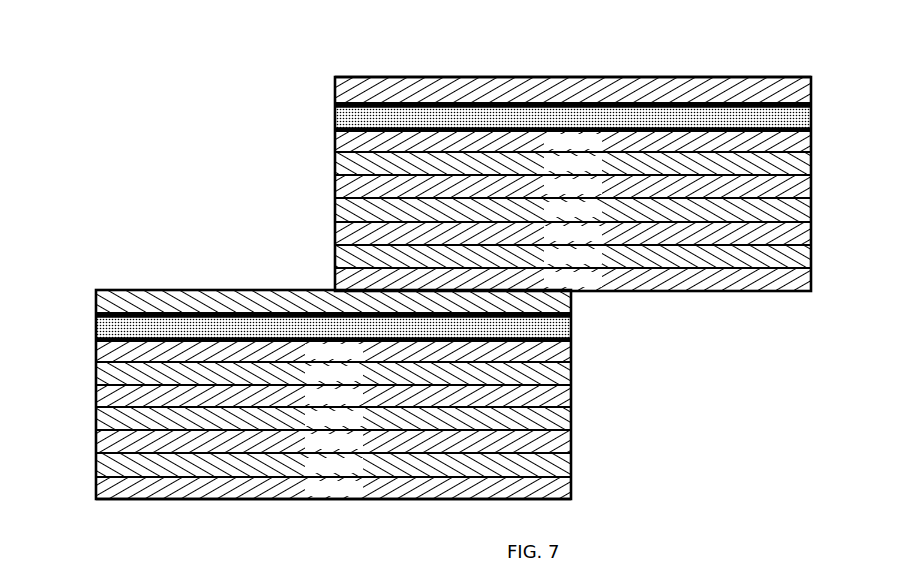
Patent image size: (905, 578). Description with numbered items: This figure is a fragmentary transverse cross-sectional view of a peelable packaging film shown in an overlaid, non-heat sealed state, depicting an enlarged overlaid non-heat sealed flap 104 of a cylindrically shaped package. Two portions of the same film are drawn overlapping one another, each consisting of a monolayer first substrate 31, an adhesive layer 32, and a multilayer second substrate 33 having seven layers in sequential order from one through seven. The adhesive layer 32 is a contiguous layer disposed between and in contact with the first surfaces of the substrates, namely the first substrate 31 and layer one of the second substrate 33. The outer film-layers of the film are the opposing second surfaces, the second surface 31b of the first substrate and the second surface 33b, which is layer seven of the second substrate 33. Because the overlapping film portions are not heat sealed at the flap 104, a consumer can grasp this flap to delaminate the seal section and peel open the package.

The monolayer first substrate 31 is at (334, 92).
The second surface of first substrate 31b is at (672, 77).
The adhesive layer 32 is at (334, 118).
The multilayer second substrate 33 is at (334, 198).
The second surface of second substrate 33b is at (283, 500).
The overlaid non-heat sealed flap 104 is at (453, 285).